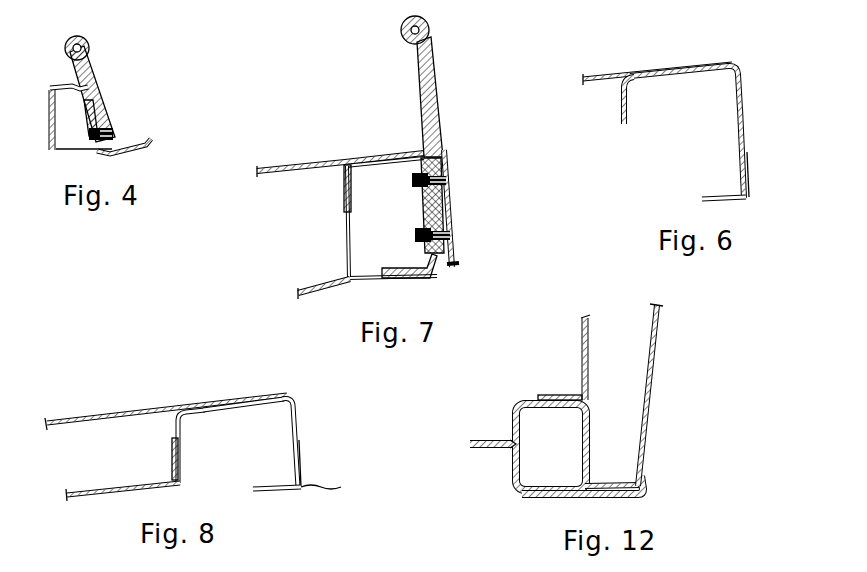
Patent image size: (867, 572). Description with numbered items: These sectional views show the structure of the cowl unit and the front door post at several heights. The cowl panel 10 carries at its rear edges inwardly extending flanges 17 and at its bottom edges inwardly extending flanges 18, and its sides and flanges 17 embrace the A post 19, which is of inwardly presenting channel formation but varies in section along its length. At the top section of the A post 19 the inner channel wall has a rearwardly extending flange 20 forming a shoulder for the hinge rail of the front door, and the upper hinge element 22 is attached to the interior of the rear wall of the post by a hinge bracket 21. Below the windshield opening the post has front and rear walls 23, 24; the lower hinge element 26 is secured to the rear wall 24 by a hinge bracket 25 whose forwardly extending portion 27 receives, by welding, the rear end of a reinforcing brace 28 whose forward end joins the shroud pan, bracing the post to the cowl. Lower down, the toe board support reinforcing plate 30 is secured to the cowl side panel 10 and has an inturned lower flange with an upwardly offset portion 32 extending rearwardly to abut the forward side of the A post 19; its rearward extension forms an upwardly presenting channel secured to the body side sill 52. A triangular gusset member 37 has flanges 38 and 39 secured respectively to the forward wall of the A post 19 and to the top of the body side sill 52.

In FIG. 7, the cowl panel 10 is at (332, 161).
In FIG. 6, the cowl panel 10 is at (608, 72).
In FIG. 8, the cowl panel 10 is at (83, 415).
In FIG. 12, the cowl panel 10 is at (652, 385).
In FIG. 6, the inwardly extending flange 17 is at (743, 90).
In FIG. 8, the inwardly extending flange 17 is at (297, 423).
In FIG. 12, the inwardly extending flange 18 is at (605, 497).
In FIG. 7, the A post 19 is at (445, 212).
In FIG. 6, the A post 19 is at (744, 125).
In FIG. 8, the A post 19 is at (270, 407).
In FIG. 4, the rearwardly extending flange 20 is at (146, 145).
In FIG. 4, the hinge bracket 21 is at (86, 120).
In FIG. 4, the upper hinge element 22 is at (88, 77).
In FIG. 7, the front wall 23 is at (345, 186).
In FIG. 6, the front wall 23 is at (622, 98).
In FIG. 8, the front wall 23 is at (183, 453).
In FIG. 7, the rear wall 24 is at (459, 263).
In FIG. 6, the rear wall 24 is at (748, 153).
In FIG. 8, the rear wall 24 is at (301, 481).
In FIG. 7, the hinge bracket 25 is at (423, 208).
In FIG. 7, the lower hinge element 26 is at (433, 90).
In FIG. 7, the forwardly extending portion 27 is at (402, 268).
In FIG. 7, the reinforcing brace 28 is at (320, 292).
In FIG. 12, the toe board support reinforcing plate 30 is at (520, 468).
In FIG. 12, the upwardly offset portion of lower flange 32 is at (495, 449).
In FIG. 8, the gusset member 37 is at (107, 487).
In FIG. 12, the gusset member 37 is at (590, 368).
In FIG. 8, the flange 38 is at (173, 452).
In FIG. 12, the flange 39 is at (555, 395).
In FIG. 12, the body side sill 52 is at (590, 437).